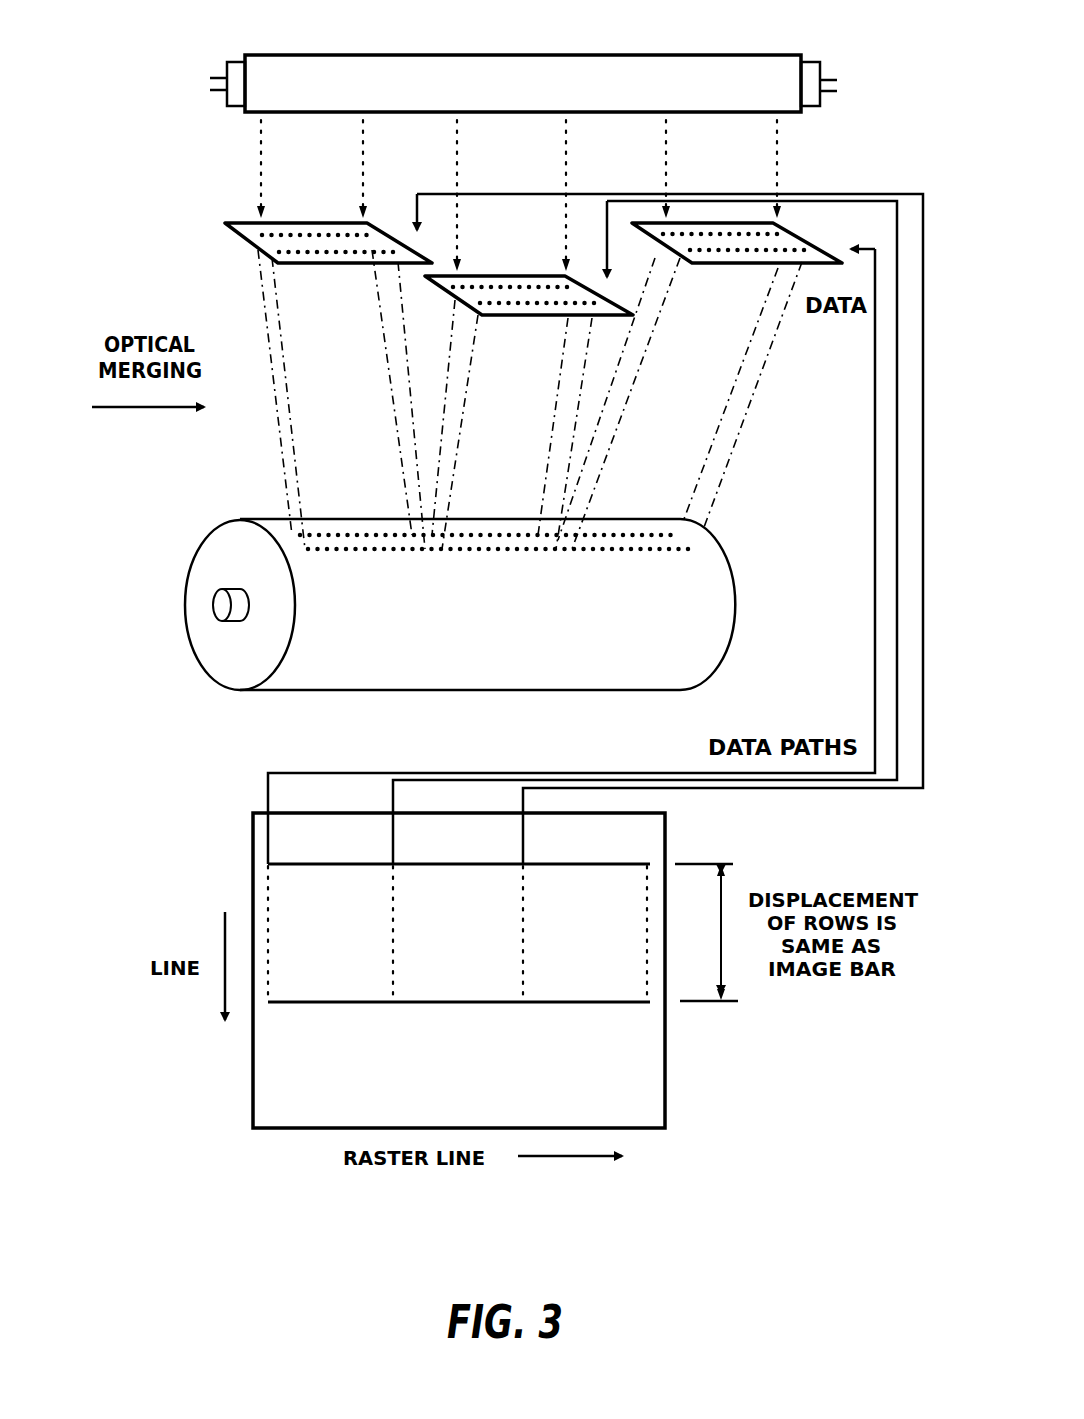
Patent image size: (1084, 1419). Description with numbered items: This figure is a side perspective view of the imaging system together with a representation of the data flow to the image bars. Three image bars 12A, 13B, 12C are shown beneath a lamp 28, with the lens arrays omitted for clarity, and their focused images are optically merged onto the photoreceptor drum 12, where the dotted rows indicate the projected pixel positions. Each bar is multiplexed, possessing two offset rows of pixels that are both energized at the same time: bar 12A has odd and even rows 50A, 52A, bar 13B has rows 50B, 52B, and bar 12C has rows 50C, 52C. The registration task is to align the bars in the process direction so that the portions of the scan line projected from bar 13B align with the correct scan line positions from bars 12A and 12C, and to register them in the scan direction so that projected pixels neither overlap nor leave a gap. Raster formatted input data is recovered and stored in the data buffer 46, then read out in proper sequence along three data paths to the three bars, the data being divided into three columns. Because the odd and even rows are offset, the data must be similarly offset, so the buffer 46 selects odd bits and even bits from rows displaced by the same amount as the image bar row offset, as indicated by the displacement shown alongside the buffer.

The lamp 28 is at (750, 62).
The photoreceptor drum 12 is at (732, 638).
The image bar 12A is at (328, 231).
The image bar 13B is at (529, 268).
The image bar 12C is at (721, 235).
The row of odd pixels 50A is at (340, 237).
The row of even pixels 52A is at (350, 254).
The row of odd pixels 50B is at (529, 287).
The row of even pixels 52B is at (537, 304).
The row of odd pixels 50C is at (663, 234).
The row of even pixels 52C is at (728, 255).
The data buffer 46 is at (242, 1166).